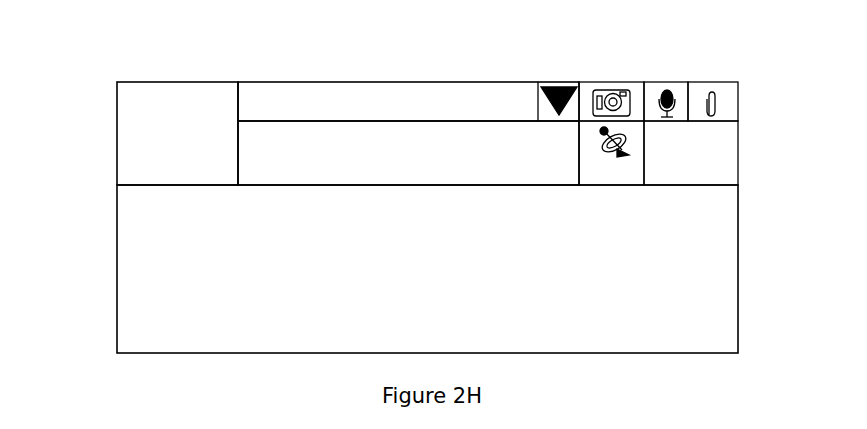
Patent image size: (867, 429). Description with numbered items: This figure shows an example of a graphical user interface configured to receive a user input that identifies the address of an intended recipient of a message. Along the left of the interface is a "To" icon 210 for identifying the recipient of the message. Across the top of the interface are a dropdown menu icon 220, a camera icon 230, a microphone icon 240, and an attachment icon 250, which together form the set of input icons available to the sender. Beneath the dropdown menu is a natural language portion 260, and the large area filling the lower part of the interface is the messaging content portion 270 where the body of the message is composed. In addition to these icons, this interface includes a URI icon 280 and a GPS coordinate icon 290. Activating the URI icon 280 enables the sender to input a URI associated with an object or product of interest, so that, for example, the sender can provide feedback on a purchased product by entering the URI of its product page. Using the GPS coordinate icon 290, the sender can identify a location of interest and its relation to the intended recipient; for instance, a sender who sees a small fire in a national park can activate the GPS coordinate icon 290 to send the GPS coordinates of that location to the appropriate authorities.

The "To" icon 210 is at (170, 148).
The dropdown menu icon 220 is at (297, 100).
The camera icon 230 is at (588, 92).
The microphone icon 240 is at (653, 90).
The attachment icon 250 is at (623, 157).
The natural language portion 260 is at (437, 158).
The messaging content portion 270 is at (436, 271).
The URI icon 280 is at (710, 180).
The GPS coordinate icon 290 is at (632, 180).